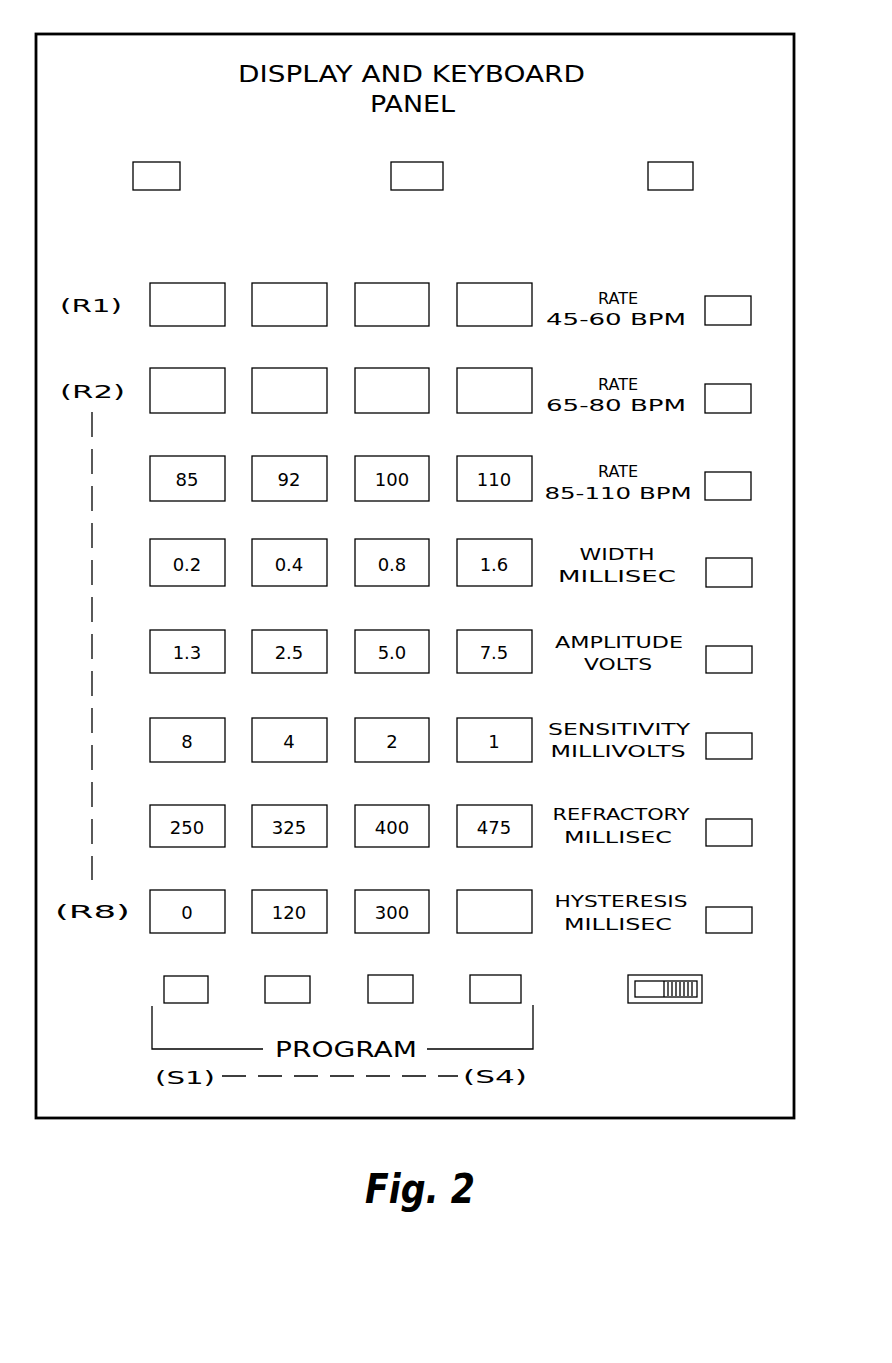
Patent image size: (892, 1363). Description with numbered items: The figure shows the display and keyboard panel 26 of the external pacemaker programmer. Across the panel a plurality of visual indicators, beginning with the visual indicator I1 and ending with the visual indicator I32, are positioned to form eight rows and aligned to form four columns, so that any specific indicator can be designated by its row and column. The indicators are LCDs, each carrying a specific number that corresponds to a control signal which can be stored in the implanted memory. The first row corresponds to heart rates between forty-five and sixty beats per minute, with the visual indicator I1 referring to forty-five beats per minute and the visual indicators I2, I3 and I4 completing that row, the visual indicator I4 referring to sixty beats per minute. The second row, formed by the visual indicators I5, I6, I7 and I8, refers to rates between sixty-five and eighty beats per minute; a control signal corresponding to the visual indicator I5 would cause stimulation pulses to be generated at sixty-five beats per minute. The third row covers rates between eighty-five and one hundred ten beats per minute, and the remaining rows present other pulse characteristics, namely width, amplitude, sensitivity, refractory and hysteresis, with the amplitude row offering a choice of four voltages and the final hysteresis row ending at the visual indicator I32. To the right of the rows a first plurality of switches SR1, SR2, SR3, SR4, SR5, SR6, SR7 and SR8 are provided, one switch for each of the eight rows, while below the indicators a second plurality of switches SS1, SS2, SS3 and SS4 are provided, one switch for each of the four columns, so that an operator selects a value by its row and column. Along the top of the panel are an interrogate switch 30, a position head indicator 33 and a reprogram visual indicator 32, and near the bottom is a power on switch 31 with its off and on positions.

The display and keyboard panel 26 is at (729, 34).
The interrogate switch 30 is at (163, 162).
The position head indicator 33 is at (427, 162).
The reprogram visual indicator 32 is at (672, 162).
The power on switch 31 is at (678, 1003).
The visual indicator I1 is at (193, 283).
The visual indicator I2 is at (290, 283).
The visual indicator I3 is at (390, 283).
The visual indicator I4 is at (494, 288).
The visual indicator I5 is at (187, 368).
The visual indicator I6 is at (287, 368).
The visual indicator I7 is at (393, 368).
The visual indicator I8 is at (493, 368).
The visual indicator I32 is at (486, 890).
The row switch SR1 is at (708, 296).
The row switch SR2 is at (708, 384).
The row switch SR3 is at (708, 472).
The row switch SR4 is at (709, 558).
The row switch SR5 is at (709, 646).
The row switch SR6 is at (709, 733).
The row switch SR7 is at (709, 819).
The row switch SR8 is at (709, 907).
The column switch SS1 is at (170, 976).
The column switch SS2 is at (272, 976).
The column switch SS3 is at (380, 975).
The column switch SS4 is at (482, 975).